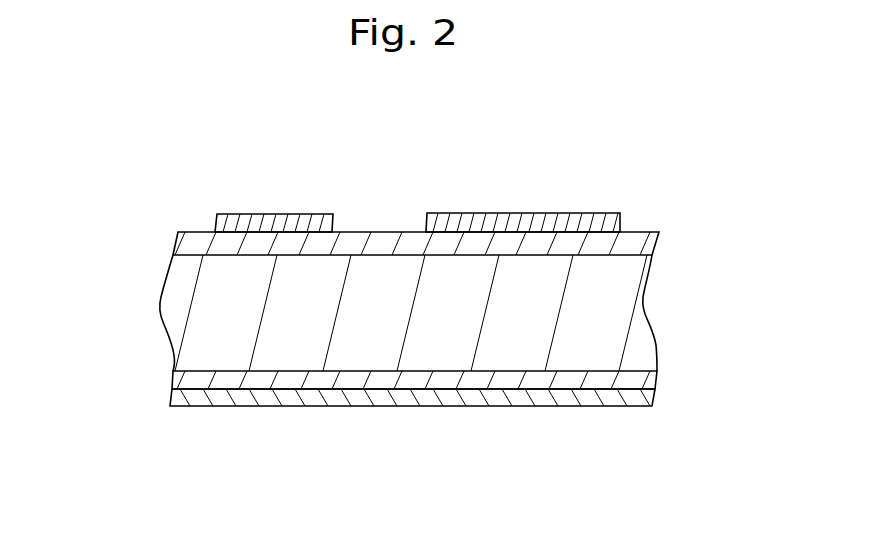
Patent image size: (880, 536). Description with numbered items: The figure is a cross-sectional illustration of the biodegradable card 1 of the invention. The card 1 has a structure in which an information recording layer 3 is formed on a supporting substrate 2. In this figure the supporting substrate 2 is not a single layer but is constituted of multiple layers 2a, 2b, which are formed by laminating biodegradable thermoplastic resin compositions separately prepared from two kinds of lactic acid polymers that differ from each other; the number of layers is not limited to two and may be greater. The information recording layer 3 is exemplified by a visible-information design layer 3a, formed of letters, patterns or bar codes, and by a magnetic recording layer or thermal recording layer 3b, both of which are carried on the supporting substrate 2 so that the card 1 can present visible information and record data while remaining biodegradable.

The card 1 is at (422, 522).
The supporting substrate 2 is at (755, 233).
The layer of the supporting substrate 2a is at (637, 315).
The layer of the supporting substrate 2b is at (645, 242).
The information recording layer 3 is at (90, 223).
The visible-information design layer 3a is at (216, 222).
The magnetic recording layer or thermal recording layer 3b is at (192, 399).